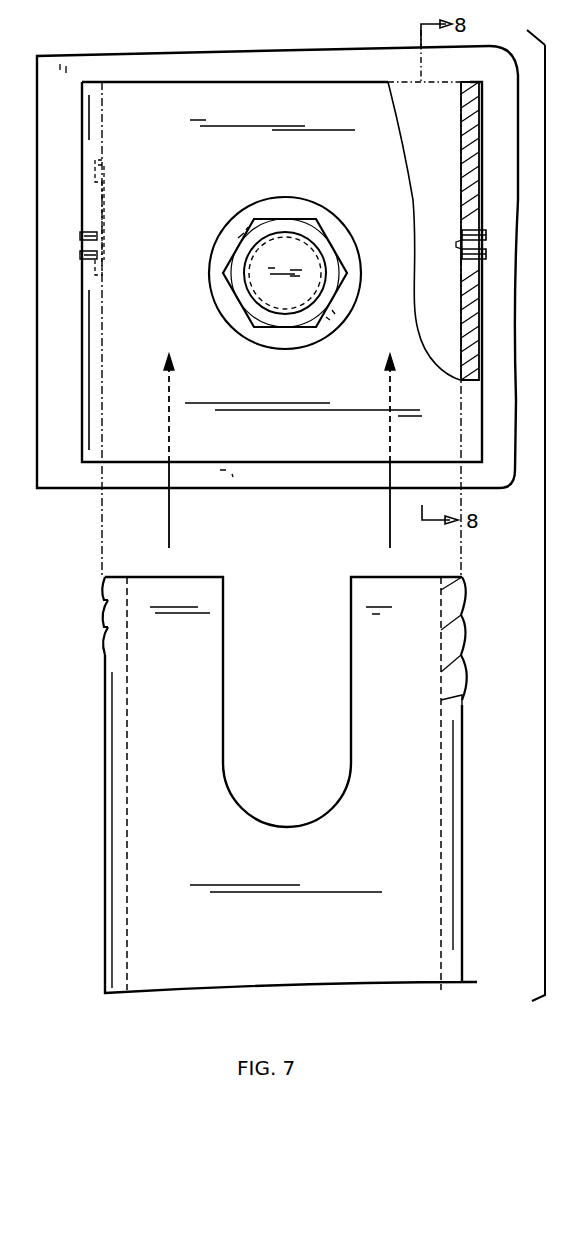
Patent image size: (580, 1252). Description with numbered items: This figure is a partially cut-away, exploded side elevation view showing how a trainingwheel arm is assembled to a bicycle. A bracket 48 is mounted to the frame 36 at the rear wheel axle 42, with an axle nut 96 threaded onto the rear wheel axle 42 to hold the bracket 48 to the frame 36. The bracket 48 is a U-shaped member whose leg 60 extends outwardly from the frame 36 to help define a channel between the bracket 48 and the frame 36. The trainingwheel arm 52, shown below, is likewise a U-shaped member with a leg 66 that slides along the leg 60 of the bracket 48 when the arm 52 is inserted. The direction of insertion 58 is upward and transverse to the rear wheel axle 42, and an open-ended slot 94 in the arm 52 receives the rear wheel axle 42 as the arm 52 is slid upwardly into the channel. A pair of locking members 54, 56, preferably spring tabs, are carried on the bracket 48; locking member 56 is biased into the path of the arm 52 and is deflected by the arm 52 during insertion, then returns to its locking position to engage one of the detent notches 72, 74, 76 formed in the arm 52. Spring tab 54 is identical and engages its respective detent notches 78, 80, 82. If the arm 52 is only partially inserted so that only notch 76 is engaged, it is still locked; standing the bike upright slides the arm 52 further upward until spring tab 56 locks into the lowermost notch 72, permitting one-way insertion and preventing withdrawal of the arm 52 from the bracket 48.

The frame 36 is at (345, 57).
The bracket 48 is at (140, 98).
The locking member 54 is at (106, 176).
The locking member 56 is at (460, 166).
The leg 60 is at (472, 108).
The axle nut 96 is at (248, 324).
The rear wheel axle 42 is at (283, 295).
The direction of insertion 58 is at (170, 500).
The arm 52 is at (105, 800).
The open-ended slot 94 is at (337, 722).
The detent notch 82 is at (105, 578).
The detent notch 80 is at (108, 618).
The detent notch 78 is at (108, 655).
The detent notch 76 is at (462, 582).
The detent notch 74 is at (463, 622).
The detent notch 72 is at (463, 658).
The leg 66 is at (470, 705).